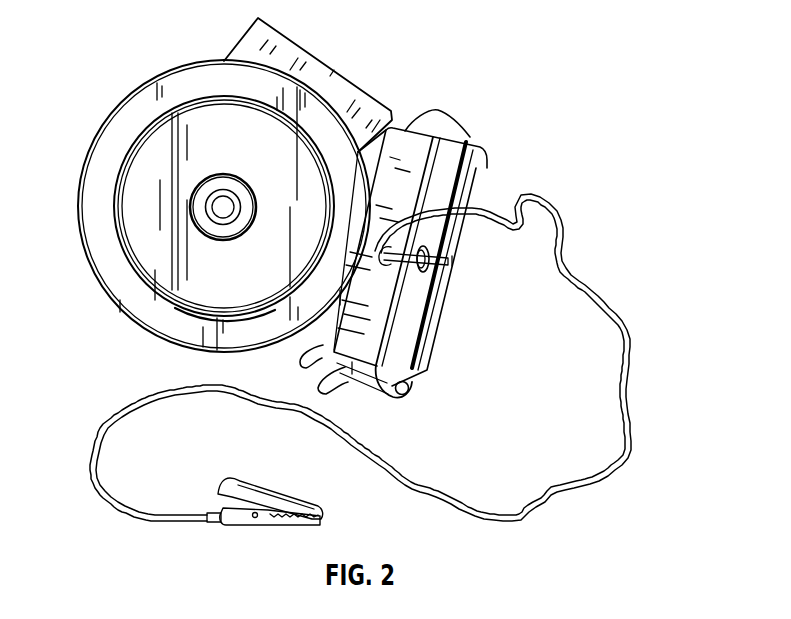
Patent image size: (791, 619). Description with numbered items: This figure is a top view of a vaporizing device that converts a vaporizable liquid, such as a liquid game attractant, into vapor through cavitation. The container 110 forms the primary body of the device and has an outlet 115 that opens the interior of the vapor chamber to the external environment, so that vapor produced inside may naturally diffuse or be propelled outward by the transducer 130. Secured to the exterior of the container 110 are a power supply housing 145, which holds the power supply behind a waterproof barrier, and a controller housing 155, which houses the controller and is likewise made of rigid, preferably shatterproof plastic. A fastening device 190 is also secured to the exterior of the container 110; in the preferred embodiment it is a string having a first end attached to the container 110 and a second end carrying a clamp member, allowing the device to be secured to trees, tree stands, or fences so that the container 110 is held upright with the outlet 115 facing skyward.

The container 110 is at (110, 268).
The outlet 115 is at (183, 200).
The transducer 130 is at (234, 193).
The controller housing 155 is at (257, 36).
The power supply housing 145 is at (430, 335).
The fastening device 190 is at (585, 284).